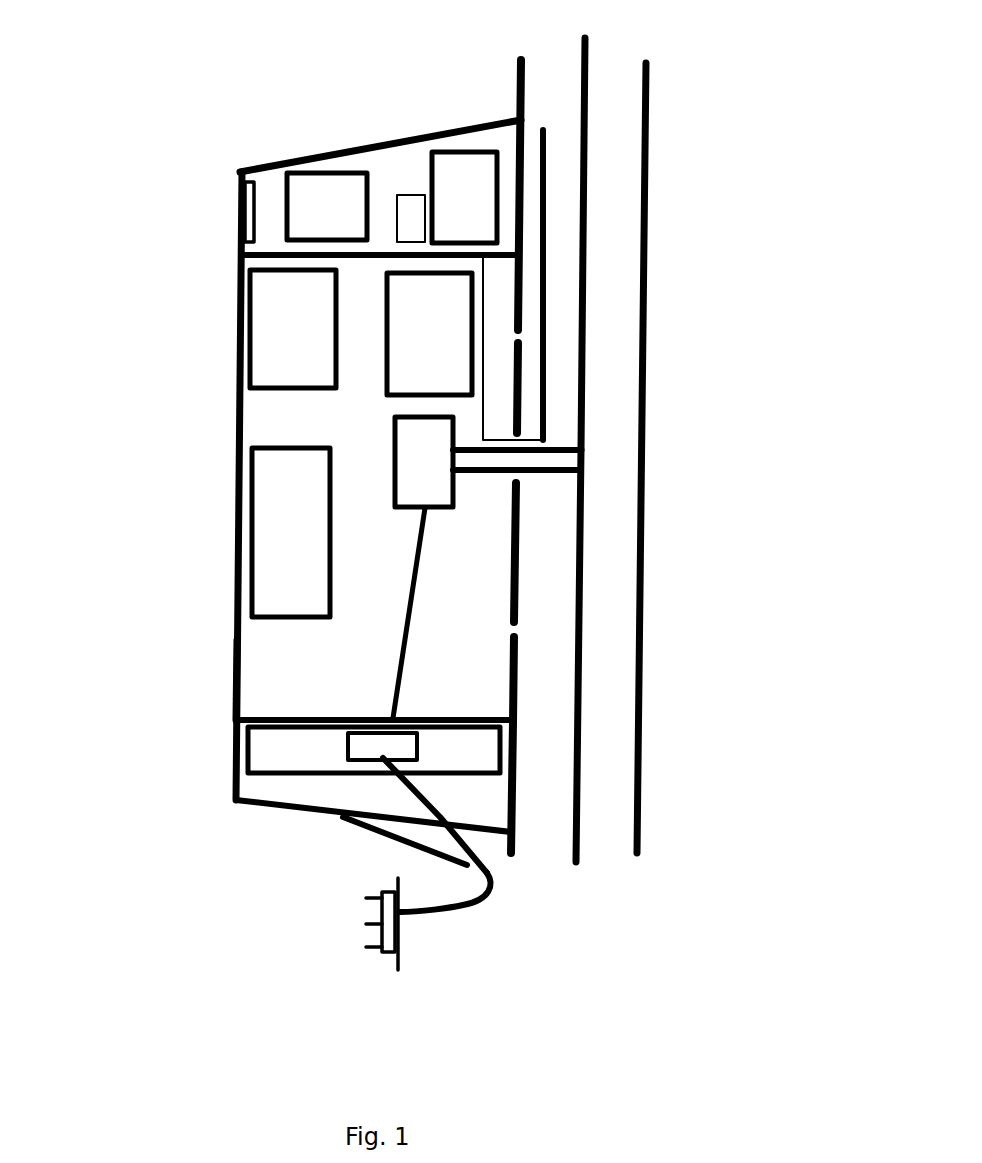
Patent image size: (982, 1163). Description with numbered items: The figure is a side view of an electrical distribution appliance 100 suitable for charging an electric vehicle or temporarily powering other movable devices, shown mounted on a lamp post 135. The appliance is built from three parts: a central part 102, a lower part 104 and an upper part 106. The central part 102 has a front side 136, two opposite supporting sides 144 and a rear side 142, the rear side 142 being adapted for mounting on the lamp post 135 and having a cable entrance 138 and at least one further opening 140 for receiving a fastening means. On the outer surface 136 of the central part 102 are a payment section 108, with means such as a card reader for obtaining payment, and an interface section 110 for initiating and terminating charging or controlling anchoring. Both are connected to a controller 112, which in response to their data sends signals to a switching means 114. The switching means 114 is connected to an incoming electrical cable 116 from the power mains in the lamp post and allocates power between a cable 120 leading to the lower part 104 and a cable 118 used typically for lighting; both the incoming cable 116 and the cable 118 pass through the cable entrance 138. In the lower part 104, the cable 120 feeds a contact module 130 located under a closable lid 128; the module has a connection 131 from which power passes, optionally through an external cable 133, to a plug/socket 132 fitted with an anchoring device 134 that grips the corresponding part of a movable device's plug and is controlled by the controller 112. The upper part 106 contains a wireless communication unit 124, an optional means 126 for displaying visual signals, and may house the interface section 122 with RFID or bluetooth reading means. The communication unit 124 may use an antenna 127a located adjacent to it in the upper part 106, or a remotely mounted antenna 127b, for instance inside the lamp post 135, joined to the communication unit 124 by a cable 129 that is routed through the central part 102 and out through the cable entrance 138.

The electrical distribution appliance 100 is at (199, 446).
The central part 102 is at (270, 639).
The lower part 104 is at (233, 759).
The upper part 106 is at (257, 158).
The payment section 108 is at (278, 328).
The interface section 110 is at (286, 550).
The controller 112 is at (440, 305).
The switching means 114 is at (440, 428).
The incoming electrical cable 116 is at (582, 838).
The cable 118 is at (592, 303).
The cable 120 is at (410, 670).
The interface section 122 is at (318, 203).
The communication unit 124 is at (457, 165).
The means for displaying visual signals 126 is at (230, 207).
The antenna 127a is at (410, 207).
The antenna 127b is at (553, 237).
The closable lid 128 is at (365, 843).
The cable 129 is at (490, 383).
The contact module 130 is at (270, 753).
The connection 131 is at (362, 748).
The plug/socket 132 is at (363, 947).
The external cable 133 is at (477, 903).
The anchoring device 134 is at (403, 887).
The lamp post 135 is at (657, 93).
The front side 136 is at (235, 668).
The cable entrance 138 is at (521, 443).
The opening 140 is at (525, 337).
The rear side 142 is at (520, 688).
The supporting sides 144 is at (372, 615).